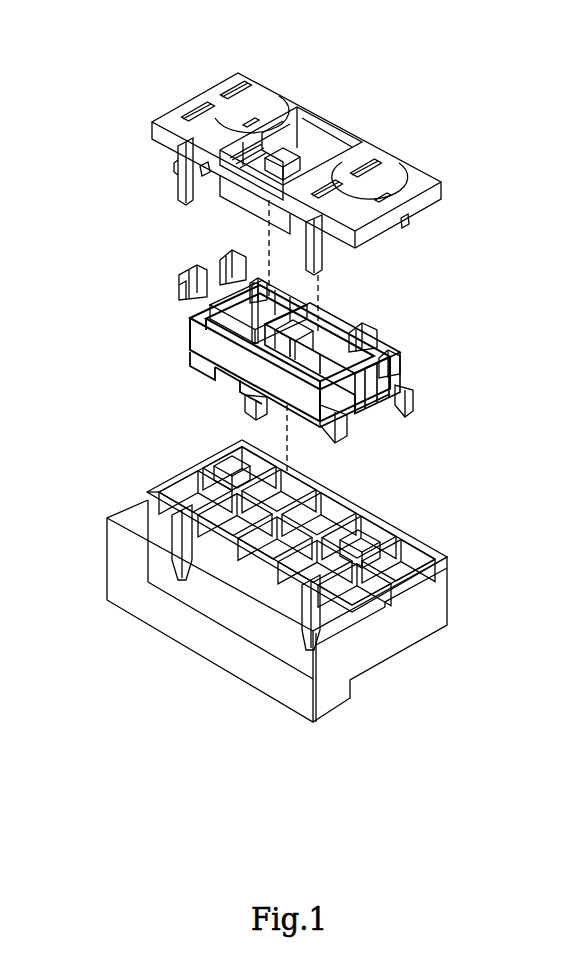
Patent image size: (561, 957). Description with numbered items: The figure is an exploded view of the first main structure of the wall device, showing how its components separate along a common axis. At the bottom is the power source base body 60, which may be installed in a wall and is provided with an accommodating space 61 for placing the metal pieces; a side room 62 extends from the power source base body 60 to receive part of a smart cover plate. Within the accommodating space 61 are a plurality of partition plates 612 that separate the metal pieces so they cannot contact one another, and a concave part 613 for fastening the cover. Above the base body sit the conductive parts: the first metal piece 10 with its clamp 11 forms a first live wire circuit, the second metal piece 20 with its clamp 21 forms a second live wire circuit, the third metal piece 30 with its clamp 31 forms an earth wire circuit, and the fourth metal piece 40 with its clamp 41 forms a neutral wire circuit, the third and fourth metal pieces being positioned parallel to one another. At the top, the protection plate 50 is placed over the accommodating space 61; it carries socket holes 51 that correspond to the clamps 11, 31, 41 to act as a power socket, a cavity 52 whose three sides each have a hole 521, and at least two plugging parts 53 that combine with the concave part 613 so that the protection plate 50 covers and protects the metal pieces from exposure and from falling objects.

The first metal piece 10 is at (300, 308).
The clamp 11 is at (228, 249).
The second metal piece 20 is at (299, 340).
The clamp 21 is at (287, 327).
The third metal piece 30 is at (197, 333).
The clamp 31 is at (260, 275).
The fourth metal piece 40 is at (233, 377).
The clamp 41 is at (192, 274).
The protection plate 50 is at (173, 78).
The socket hole 51 is at (233, 90).
The cavity 52 is at (318, 145).
The hole 521 is at (277, 130).
The plugging part 53 is at (173, 173).
The power source base body 60 is at (145, 456).
The accommodating space 61 is at (333, 532).
The partition plate 612 is at (228, 462).
The concave part 613 is at (186, 523).
The side room 62 is at (200, 628).